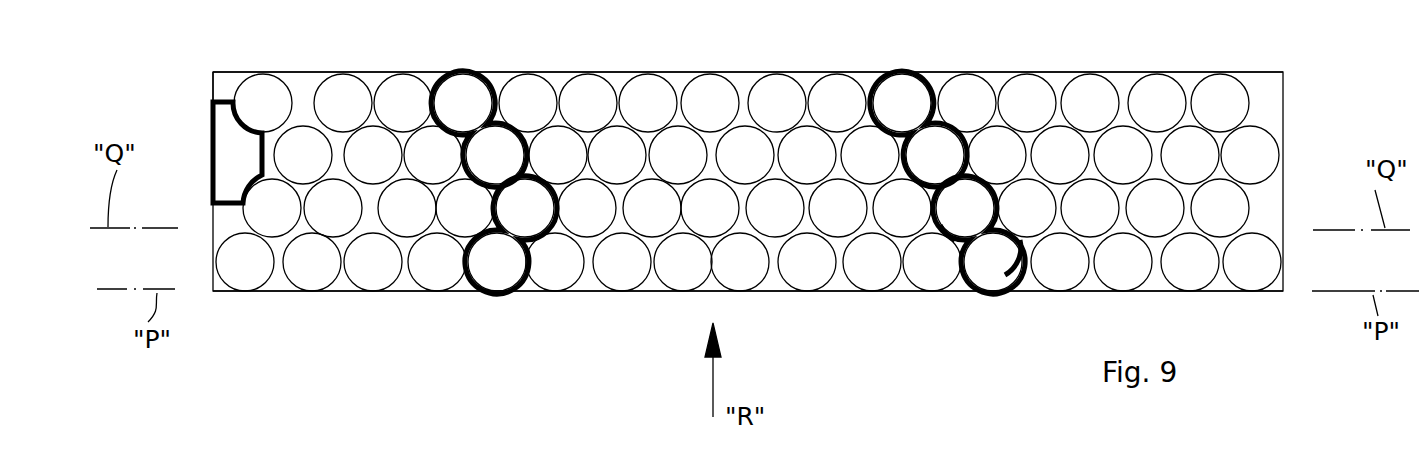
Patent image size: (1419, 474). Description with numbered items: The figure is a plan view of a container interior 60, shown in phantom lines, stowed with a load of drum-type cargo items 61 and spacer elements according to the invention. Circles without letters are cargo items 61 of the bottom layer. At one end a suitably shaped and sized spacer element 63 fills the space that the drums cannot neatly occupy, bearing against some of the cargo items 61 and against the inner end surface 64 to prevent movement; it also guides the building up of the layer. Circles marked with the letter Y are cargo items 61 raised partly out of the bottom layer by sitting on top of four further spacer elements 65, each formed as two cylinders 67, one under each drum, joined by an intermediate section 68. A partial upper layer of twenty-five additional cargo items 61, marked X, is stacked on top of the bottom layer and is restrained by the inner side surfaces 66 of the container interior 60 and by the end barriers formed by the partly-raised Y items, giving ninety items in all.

The container interior 60 is at (1063, 72).
The cargo items 61 is at (1217, 103).
The spacer element 63 is at (226, 153).
The inner end surface 64 is at (222, 84).
The spacer elements 65 is at (492, 96).
The inner side surfaces 66 is at (681, 76).
The cylinders 67 is at (972, 287).
The intermediate section 68 is at (1007, 215).